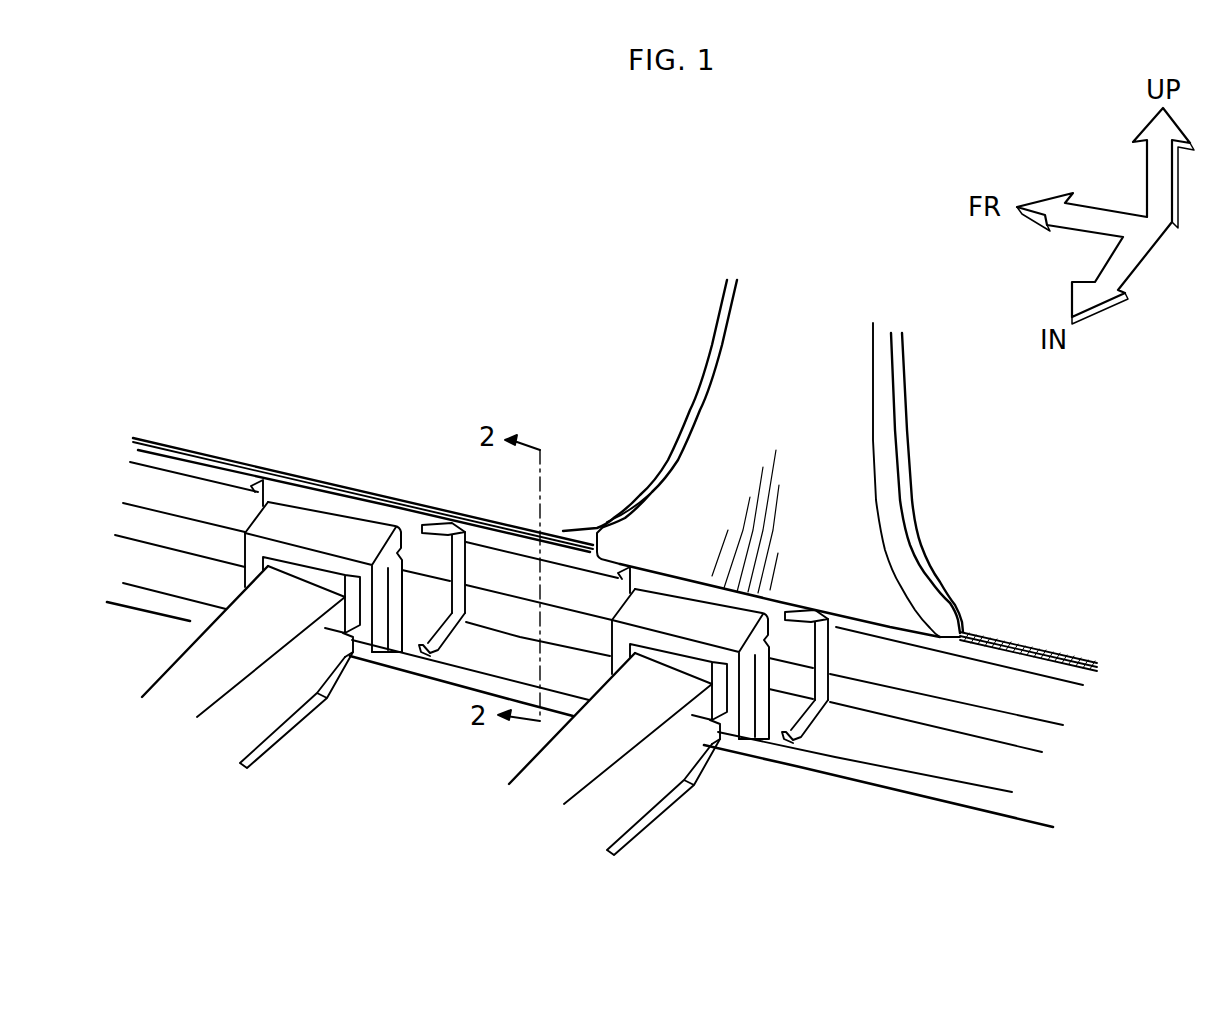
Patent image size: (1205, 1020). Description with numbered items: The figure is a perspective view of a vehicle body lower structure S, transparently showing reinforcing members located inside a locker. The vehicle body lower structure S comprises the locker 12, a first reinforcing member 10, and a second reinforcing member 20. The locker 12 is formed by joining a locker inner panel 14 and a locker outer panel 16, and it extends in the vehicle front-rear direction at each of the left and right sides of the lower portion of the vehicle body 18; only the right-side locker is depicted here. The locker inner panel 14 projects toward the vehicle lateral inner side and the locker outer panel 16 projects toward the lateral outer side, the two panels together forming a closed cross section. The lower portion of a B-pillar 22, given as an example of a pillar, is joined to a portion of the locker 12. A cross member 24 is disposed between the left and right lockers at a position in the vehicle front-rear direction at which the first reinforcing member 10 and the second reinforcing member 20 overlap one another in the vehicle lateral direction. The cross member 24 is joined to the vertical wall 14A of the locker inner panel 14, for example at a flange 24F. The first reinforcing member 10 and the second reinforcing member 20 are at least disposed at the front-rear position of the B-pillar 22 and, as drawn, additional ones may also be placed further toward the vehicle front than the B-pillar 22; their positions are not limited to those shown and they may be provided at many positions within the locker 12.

The first reinforcing member 10 is at (380, 663).
The locker 12 is at (227, 438).
The locker inner panel 14 is at (948, 800).
The vertical wall 14A is at (847, 737).
The locker outer panel 16 is at (1022, 641).
The vehicle body 18 is at (647, 286).
The second reinforcing member 20 is at (470, 558).
The B-pillar 22 is at (907, 428).
The cross member 24 is at (269, 749).
The flange 24F is at (268, 568).
The vehicle body lower structure S is at (460, 349).